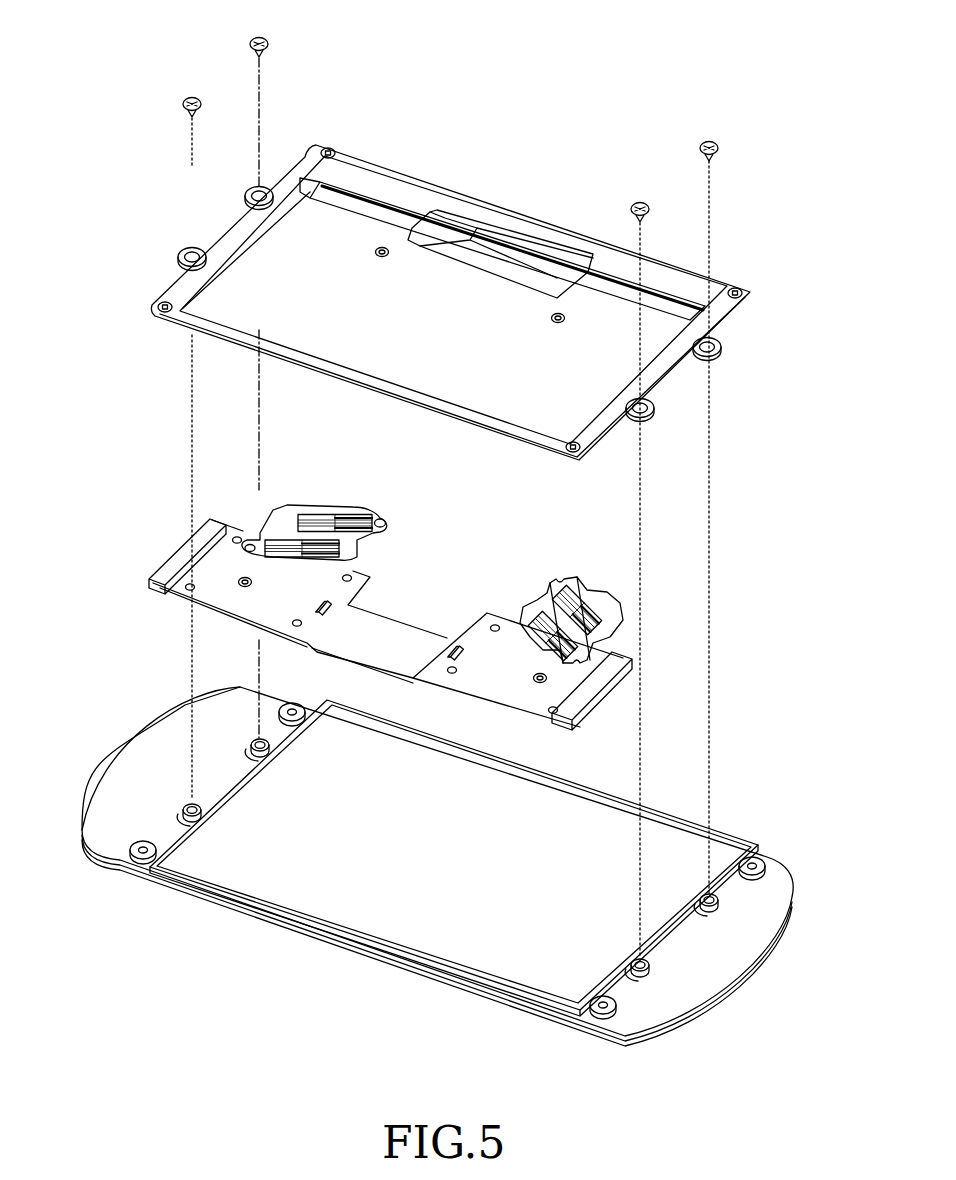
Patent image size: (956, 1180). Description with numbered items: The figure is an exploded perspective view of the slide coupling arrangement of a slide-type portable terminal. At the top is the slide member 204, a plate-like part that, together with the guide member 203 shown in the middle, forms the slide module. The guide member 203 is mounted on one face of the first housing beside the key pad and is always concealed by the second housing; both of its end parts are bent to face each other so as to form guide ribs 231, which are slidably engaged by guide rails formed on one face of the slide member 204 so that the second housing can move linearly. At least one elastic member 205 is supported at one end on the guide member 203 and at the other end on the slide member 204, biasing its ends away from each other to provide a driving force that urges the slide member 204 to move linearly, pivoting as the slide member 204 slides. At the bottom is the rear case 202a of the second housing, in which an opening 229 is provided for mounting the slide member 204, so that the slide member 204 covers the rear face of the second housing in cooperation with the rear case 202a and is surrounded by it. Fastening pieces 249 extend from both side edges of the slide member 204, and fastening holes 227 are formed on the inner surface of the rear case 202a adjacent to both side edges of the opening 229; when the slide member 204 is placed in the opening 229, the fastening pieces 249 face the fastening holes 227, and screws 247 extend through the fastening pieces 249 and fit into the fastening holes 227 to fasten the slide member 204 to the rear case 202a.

The rear case 202a is at (451, 866).
The guide member 203 is at (414, 610).
The slide member 204 is at (428, 167).
The elastic member 205 is at (342, 497).
The fastening hole 227 is at (250, 742).
The opening 229 is at (420, 918).
The guide rib 231 is at (178, 556).
The screw 247 is at (250, 42).
The fastening piece 249 is at (268, 186).